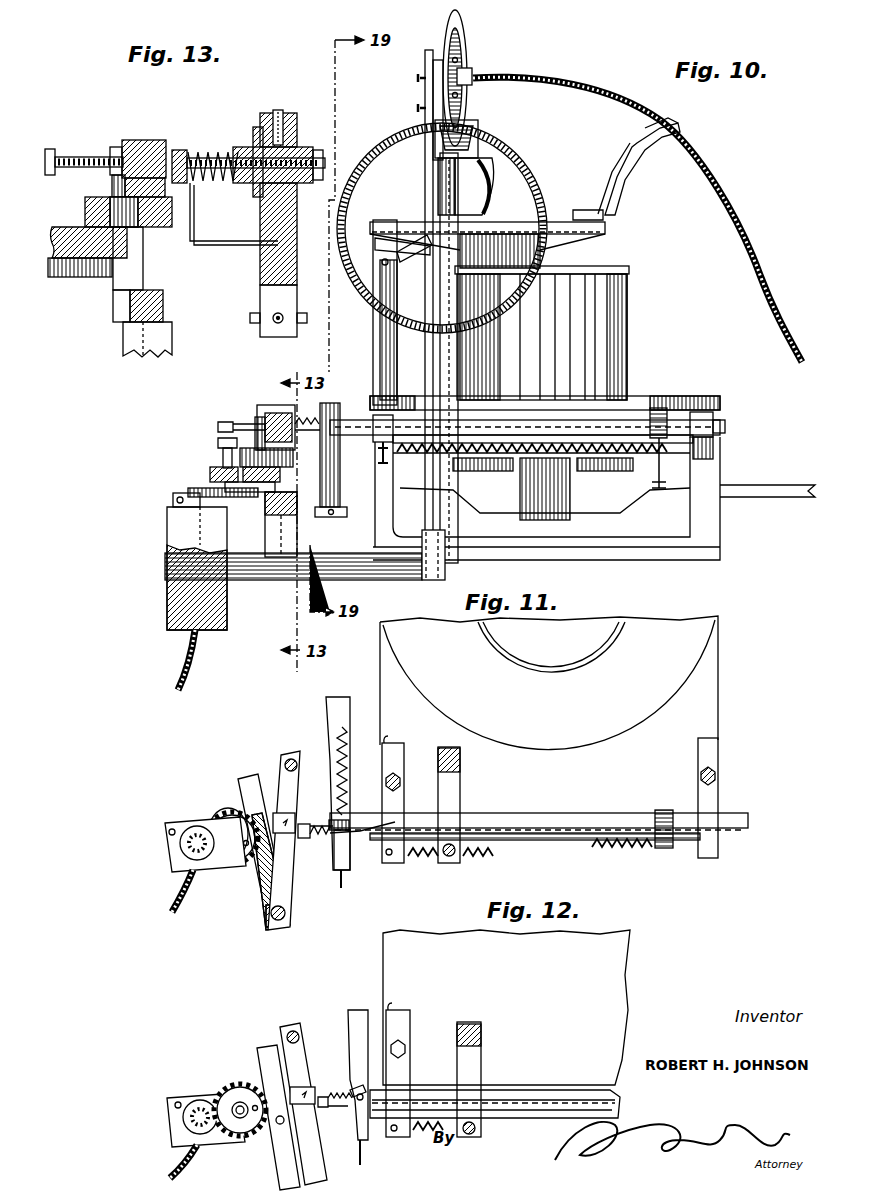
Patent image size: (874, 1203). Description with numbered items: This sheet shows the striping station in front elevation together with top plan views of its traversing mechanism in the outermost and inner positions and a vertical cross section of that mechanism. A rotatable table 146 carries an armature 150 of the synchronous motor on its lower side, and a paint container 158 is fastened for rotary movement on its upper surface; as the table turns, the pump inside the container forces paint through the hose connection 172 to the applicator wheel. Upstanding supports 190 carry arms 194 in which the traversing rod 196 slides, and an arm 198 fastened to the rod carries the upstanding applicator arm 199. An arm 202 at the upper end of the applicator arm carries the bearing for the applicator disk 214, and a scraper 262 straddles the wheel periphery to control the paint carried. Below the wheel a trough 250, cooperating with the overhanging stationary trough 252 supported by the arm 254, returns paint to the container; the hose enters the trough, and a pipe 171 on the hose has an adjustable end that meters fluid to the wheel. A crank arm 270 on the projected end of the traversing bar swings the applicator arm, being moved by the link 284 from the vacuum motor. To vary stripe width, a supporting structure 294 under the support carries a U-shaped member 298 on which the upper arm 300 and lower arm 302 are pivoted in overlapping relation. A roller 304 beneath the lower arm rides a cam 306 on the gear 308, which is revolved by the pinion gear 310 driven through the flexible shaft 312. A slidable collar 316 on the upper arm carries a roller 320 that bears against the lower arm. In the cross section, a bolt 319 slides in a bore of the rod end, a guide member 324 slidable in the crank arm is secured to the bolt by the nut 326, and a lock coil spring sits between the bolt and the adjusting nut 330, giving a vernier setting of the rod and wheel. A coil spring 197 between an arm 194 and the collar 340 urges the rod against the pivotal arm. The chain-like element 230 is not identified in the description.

In FIG. 10, the table 146 is at (685, 397).
In FIG. 11, the table 146 is at (655, 695).
In FIG. 12, the table 146 is at (610, 970).
In FIG. 10, the armature 150 is at (680, 447).
In FIG. 10, the paint container 158 is at (605, 316).
In FIG. 10, the pipe 171 is at (488, 205).
In FIG. 10, the hose connection 172 is at (385, 140).
In FIG. 10, the upstanding supports 190 is at (390, 525).
In FIG. 10, the arms 194 is at (375, 418).
In FIG. 11, the arms 194 is at (392, 868).
In FIG. 12, the arms 194 is at (400, 1072).
In FIG. 13, the traversing rod 196 is at (305, 147).
In FIG. 10, the traversing rod 196 is at (640, 410).
In FIG. 11, the traversing rod 196 is at (597, 818).
In FIG. 12, the traversing rod 196 is at (512, 1118).
In FIG. 10, the coil spring 197 is at (610, 462).
In FIG. 11, the coil spring 197 is at (633, 850).
In FIG. 11, the arm 198 is at (462, 812).
In FIG. 12, the arm 198 is at (469, 1079).
In FIG. 10, the applicator arm 199 is at (445, 335).
In FIG. 11, the applicator arm 199 is at (462, 765).
In FIG. 12, the applicator arm 199 is at (482, 1032).
In FIG. 10, the arm 202 is at (425, 165).
In FIG. 10, the applicator disk 214 is at (462, 30).
In FIG. 10, the chain 230 is at (610, 98).
In FIG. 10, the trough 250 is at (488, 172).
In FIG. 10, the stationary trough 252 is at (606, 248).
In FIG. 10, the arm 254 is at (410, 220).
In FIG. 10, the scraper 262 is at (470, 130).
In FIG. 13, the crank arm 270 is at (265, 283).
In FIG. 10, the crank arm 270 is at (337, 445).
In FIG. 11, the crank arm 270 is at (350, 866).
In FIG. 12, the crank arm 270 is at (367, 1138).
In FIG. 11, the link 284 is at (326, 715).
In FIG. 10, the supporting structure 294 is at (368, 570).
In FIG. 11, the supporting structure 294 is at (360, 815).
In FIG. 13, the U-shaped member 298 is at (150, 298).
In FIG. 10, the U-shaped member 298 is at (268, 527).
In FIG. 13, the upper arm 300 is at (122, 143).
In FIG. 10, the upper arm 300 is at (268, 413).
In FIG. 11, the upper arm 300 is at (283, 775).
In FIG. 12, the upper arm 300 is at (295, 1045).
In FIG. 13, the lower arm 302 is at (85, 206).
In FIG. 11, the lower arm 302 is at (246, 778).
In FIG. 12, the lower arm 302 is at (265, 1048).
In FIG. 13, the roller 304 is at (90, 248).
In FIG. 10, the roller 304 is at (282, 475).
In FIG. 11, the roller 304 is at (255, 898).
In FIG. 13, the cam 306 is at (56, 270).
In FIG. 10, the cam 306 is at (214, 468).
In FIG. 11, the cam 306 is at (222, 810).
In FIG. 12, the cam 306 is at (230, 1088).
In FIG. 10, the gear 308 is at (190, 489).
In FIG. 11, the gear 308 is at (237, 862).
In FIG. 12, the gear 308 is at (235, 1136).
In FIG. 10, the pinion gear 310 is at (178, 500).
In FIG. 11, the pinion gear 310 is at (190, 845).
In FIG. 12, the pinion gear 310 is at (195, 1118).
In FIG. 10, the flexible shaft 312 is at (186, 656).
In FIG. 11, the flexible shaft 312 is at (170, 905).
In FIG. 12, the flexible shaft 312 is at (183, 1161).
In FIG. 13, the slidable collar 316 is at (140, 140).
In FIG. 10, the slidable collar 316 is at (262, 412).
In FIG. 11, the slidable collar 316 is at (293, 813).
In FIG. 12, the slidable collar 316 is at (305, 1087).
In FIG. 11, the bolt 319 is at (322, 840).
In FIG. 13, the roller 320 is at (215, 150).
In FIG. 10, the roller 320 is at (220, 424).
In FIG. 13, the guide member 324 is at (196, 222).
In FIG. 13, the nut 326 is at (182, 150).
In FIG. 13, the adjusting nut 330 is at (250, 130).
In FIG. 11, the collar 340 is at (662, 848).